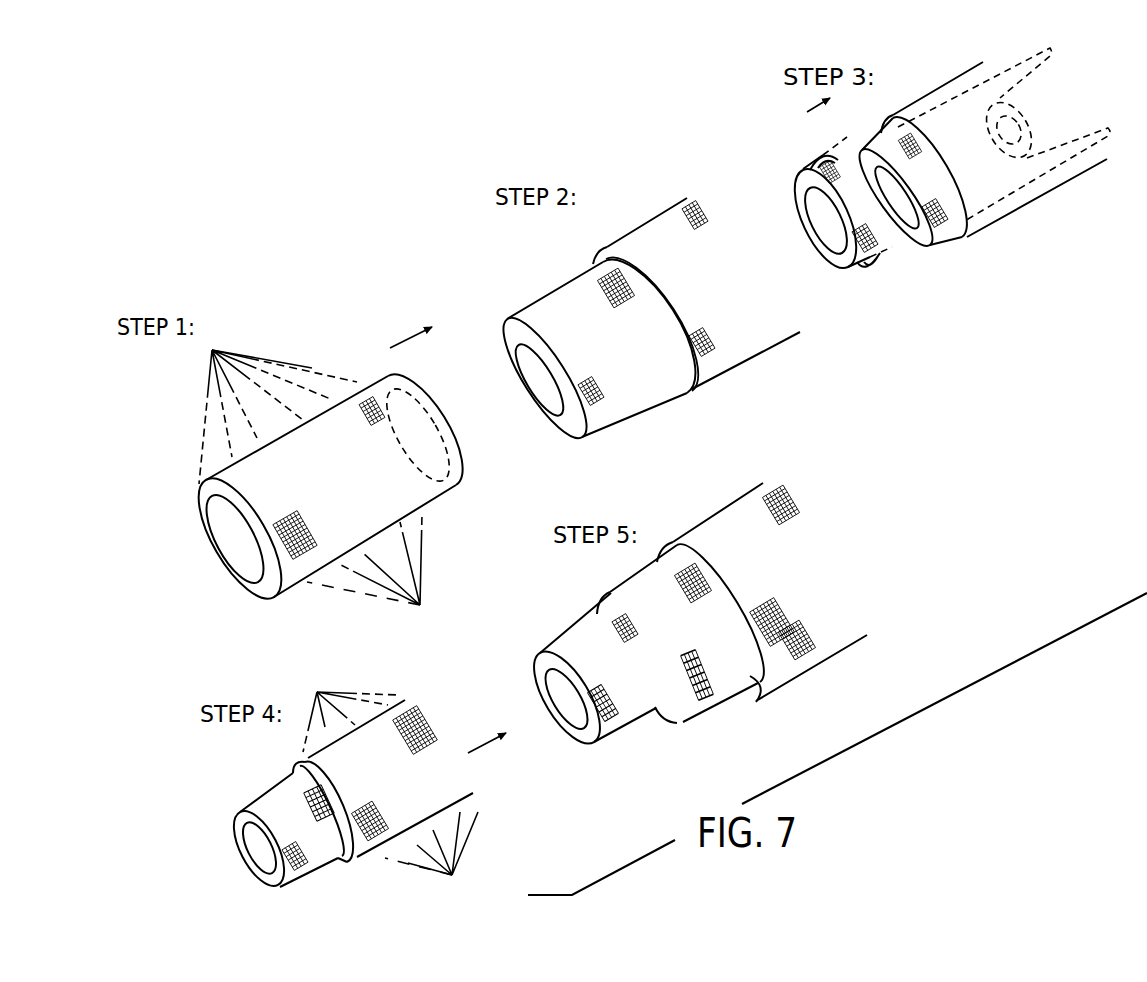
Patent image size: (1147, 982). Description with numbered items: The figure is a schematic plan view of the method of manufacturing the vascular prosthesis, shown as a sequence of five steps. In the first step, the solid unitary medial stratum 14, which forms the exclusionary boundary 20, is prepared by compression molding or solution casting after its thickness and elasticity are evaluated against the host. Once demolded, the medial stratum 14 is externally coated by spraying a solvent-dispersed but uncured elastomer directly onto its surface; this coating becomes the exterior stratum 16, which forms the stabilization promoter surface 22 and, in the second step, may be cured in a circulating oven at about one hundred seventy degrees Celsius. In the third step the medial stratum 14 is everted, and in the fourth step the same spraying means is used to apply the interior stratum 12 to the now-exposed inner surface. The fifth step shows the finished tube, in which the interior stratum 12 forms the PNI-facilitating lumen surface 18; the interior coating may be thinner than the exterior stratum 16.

The interior stratum 12 is at (827, 690).
The medial stratum 14 is at (234, 590).
The exterior stratum 16 is at (311, 364).
The PNI-facilitating lumen surface 18 is at (755, 702).
The exclusionary boundary 20 is at (227, 559).
The stabilization promoter surface 22 is at (684, 397).